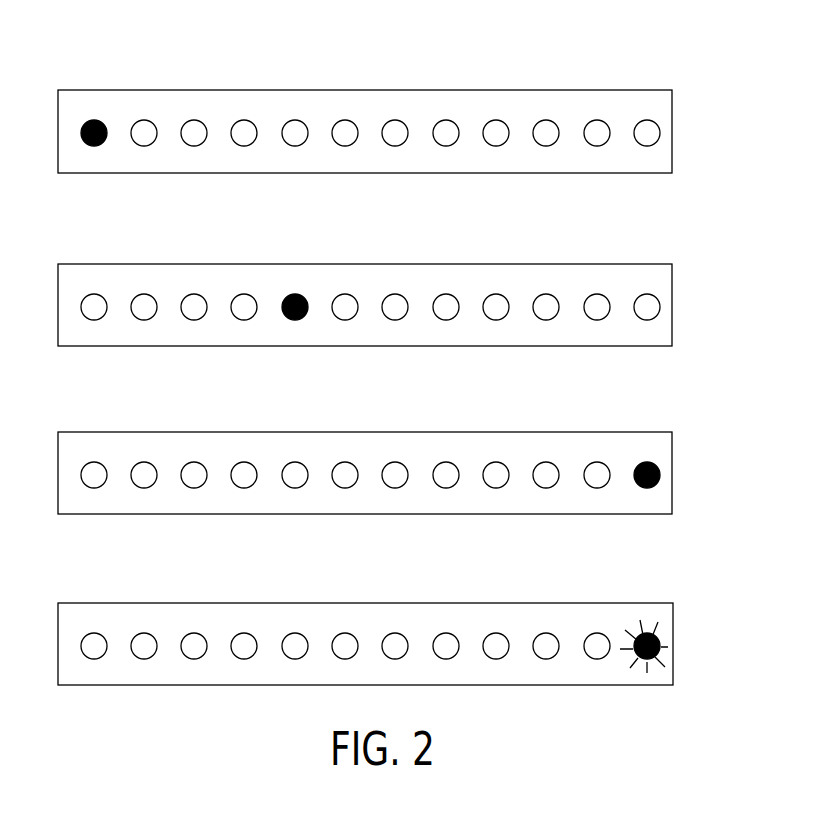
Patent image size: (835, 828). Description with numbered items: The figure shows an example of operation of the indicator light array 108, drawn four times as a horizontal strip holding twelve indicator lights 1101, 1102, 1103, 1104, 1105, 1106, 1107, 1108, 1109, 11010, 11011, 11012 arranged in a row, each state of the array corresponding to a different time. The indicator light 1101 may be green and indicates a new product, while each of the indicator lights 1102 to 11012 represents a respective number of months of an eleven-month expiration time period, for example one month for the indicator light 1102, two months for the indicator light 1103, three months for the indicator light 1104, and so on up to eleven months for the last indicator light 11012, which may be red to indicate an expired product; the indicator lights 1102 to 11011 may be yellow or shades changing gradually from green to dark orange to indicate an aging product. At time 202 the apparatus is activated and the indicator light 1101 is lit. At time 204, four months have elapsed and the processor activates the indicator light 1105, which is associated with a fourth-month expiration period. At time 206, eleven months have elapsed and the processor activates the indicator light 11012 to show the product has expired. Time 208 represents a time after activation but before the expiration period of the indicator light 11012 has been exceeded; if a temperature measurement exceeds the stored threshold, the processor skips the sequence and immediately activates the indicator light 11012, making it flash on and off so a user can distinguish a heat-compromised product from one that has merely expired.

The indicator light array 108 is at (61, 91).
The indicator light 1101 is at (89, 633).
The indicator light 1102 is at (139, 633).
The indicator light 1103 is at (189, 633).
The indicator light 1104 is at (239, 633).
The indicator light 1105 is at (290, 633).
The indicator light 1106 is at (340, 633).
The indicator light 1107 is at (390, 633).
The indicator light 1108 is at (441, 633).
The indicator light 1109 is at (491, 633).
The indicator light 11010 is at (541, 633).
The indicator light 11011 is at (592, 633).
The indicator light 11012 is at (642, 633).
The time 202 is at (672, 126).
The time 204 is at (672, 300).
The time 206 is at (672, 468).
The time 208 is at (673, 639).